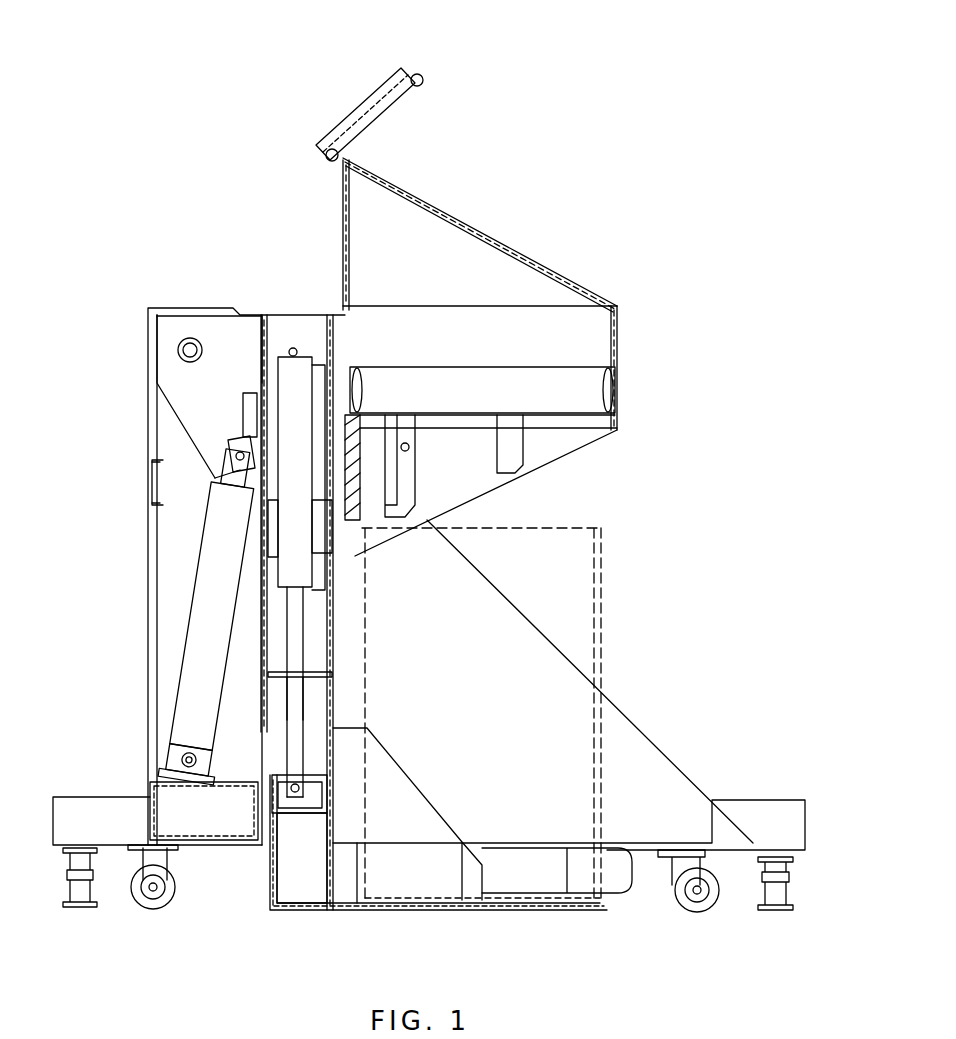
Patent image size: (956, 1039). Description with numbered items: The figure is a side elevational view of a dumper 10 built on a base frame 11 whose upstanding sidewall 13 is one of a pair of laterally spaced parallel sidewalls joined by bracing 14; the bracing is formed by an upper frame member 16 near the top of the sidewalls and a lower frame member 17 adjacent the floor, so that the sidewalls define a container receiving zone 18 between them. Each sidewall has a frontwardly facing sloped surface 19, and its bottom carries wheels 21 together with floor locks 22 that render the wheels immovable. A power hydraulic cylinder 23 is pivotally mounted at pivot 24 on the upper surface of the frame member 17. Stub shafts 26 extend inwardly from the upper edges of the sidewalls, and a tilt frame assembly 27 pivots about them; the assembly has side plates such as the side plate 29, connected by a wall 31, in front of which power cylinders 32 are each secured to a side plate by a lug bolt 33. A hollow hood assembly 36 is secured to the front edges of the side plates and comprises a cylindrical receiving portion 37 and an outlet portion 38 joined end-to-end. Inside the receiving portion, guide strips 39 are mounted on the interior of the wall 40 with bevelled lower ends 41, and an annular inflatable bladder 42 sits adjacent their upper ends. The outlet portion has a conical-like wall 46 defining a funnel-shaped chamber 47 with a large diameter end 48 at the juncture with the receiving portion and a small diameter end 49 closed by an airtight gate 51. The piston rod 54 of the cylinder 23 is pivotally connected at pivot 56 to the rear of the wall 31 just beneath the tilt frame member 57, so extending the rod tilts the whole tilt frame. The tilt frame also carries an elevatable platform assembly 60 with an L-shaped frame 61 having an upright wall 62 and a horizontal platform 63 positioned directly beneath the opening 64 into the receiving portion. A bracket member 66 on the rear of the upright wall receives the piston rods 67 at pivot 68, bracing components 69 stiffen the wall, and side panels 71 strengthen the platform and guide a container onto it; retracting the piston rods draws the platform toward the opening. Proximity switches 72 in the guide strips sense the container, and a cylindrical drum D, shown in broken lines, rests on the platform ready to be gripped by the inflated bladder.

The dumper 10 is at (131, 312).
The base frame 11 is at (148, 402).
The sidewall 13 is at (660, 780).
The bracing 14 is at (145, 470).
The frame member 16 is at (148, 487).
The frame member 17 is at (150, 790).
The container receiving zone 18 is at (790, 714).
The sloped surface 19 is at (620, 703).
The wheels 21 is at (170, 903).
The floor locks 22 is at (68, 888).
The power hydraulic cylinder 23 is at (175, 690).
The pivotal mounting 24 is at (180, 757).
The stub shafts 26 is at (190, 338).
The tilt frame assembly 27 is at (262, 312).
The side plate 29 is at (226, 330).
The wall 31 is at (235, 610).
The power cylinders 32 is at (290, 388).
The lug bolt 33 is at (296, 350).
The hood assembly 36 is at (598, 278).
The receiving portion 37 is at (625, 350).
The outlet portion 38 is at (500, 178).
The guide strips 39 is at (380, 500).
The wall 40 is at (620, 322).
The bevelled lower ends 41 is at (400, 520).
The annular inflatable bladder 42 is at (520, 376).
The conical-like wall 46 is at (478, 145).
The funnel-shaped chamber 47 is at (495, 235).
The large diameter end 48 is at (492, 306).
The small diameter end 49 is at (384, 108).
The gate 51 is at (425, 72).
The piston rod 54 is at (232, 476).
The pivotal connection 56 is at (240, 448).
The tilt frame member 57 is at (243, 415).
The elevatable platform assembly 60 is at (318, 915).
The L-shaped frame 61 is at (320, 852).
The upright wall 62 is at (333, 645).
The platform 63 is at (418, 898).
The opening 64 is at (480, 495).
The bracket member 66 is at (270, 785).
The piston rods 67 is at (333, 710).
The pivotal connection 68 is at (330, 790).
The bracing components 69 is at (335, 575).
The side panels 71 is at (420, 810).
The proximity switches 72 is at (410, 449).
The cylindrical drum D is at (602, 567).